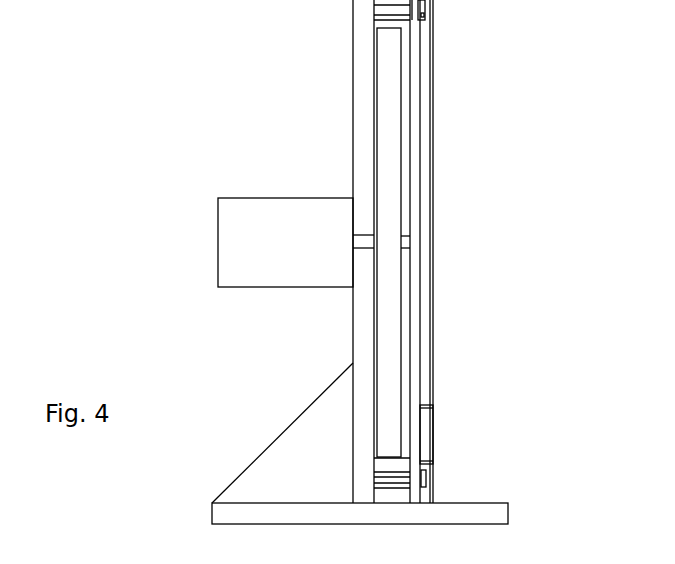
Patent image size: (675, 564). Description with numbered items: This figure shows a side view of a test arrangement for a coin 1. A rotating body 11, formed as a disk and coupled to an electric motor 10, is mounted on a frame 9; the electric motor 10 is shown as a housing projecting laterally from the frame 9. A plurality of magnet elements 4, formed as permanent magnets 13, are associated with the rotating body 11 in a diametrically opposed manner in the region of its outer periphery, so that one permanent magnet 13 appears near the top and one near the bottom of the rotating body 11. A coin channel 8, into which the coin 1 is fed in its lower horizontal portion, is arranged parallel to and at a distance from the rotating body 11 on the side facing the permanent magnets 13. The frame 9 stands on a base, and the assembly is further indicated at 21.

The coin 1 is at (423, 430).
The magnet elements 4 is at (411, 64).
The coin channel 8 is at (435, 417).
The frame 9 is at (351, 108).
The electric motor 10 is at (225, 208).
The rotating body 11 is at (378, 118).
The permanent magnets 13 is at (403, 43).
The assembly 21 is at (445, 153).